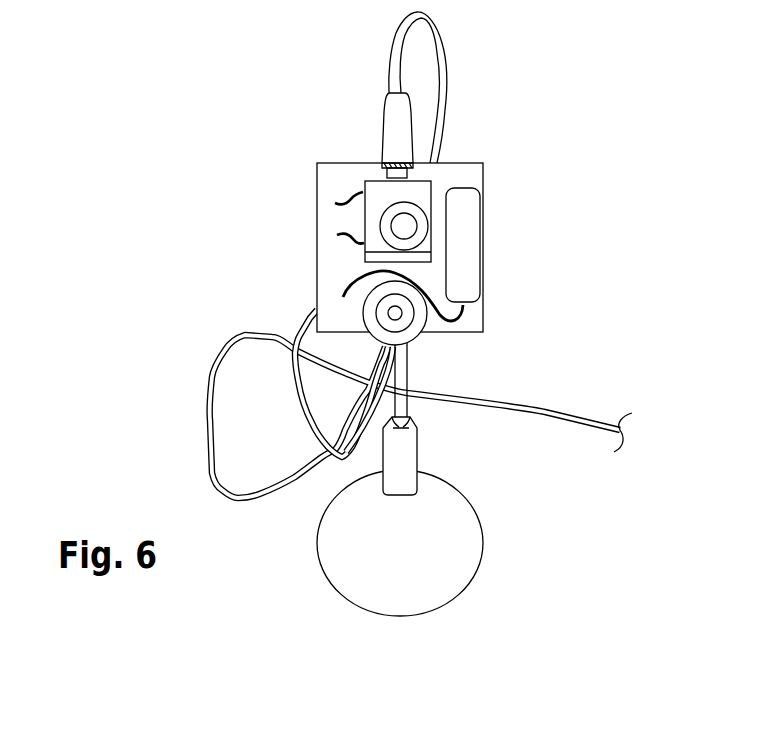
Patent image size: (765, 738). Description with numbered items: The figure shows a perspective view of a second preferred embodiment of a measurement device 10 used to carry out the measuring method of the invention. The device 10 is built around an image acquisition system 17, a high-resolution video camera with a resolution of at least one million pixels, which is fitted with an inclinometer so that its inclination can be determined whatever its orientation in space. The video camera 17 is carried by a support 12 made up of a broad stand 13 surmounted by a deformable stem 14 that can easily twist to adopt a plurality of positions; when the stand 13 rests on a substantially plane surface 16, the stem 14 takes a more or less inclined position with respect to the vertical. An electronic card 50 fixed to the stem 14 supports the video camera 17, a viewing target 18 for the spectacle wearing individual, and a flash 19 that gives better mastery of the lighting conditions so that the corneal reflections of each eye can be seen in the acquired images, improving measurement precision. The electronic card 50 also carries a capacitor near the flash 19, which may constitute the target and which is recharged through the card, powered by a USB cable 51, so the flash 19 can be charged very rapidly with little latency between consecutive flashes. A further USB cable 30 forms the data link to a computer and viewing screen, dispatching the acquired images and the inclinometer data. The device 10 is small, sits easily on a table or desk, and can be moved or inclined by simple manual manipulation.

The measurement device 10 is at (503, 173).
The USB cable 51 is at (444, 69).
The electronic card 50 is at (330, 225).
The image acquisition system 17 is at (410, 222).
The viewing target 18 is at (463, 268).
The flash 19 is at (385, 313).
The USB cable 30 is at (545, 412).
The deformable stem 14 is at (403, 447).
The stand 13 is at (372, 533).
The support 12 is at (425, 578).
The plane surface 16 is at (243, 615).